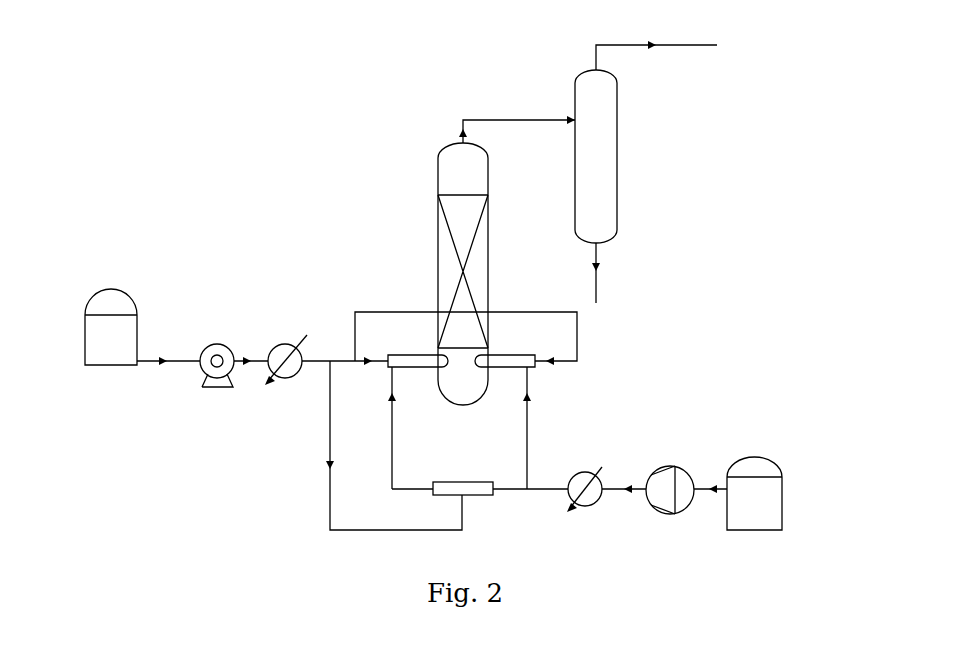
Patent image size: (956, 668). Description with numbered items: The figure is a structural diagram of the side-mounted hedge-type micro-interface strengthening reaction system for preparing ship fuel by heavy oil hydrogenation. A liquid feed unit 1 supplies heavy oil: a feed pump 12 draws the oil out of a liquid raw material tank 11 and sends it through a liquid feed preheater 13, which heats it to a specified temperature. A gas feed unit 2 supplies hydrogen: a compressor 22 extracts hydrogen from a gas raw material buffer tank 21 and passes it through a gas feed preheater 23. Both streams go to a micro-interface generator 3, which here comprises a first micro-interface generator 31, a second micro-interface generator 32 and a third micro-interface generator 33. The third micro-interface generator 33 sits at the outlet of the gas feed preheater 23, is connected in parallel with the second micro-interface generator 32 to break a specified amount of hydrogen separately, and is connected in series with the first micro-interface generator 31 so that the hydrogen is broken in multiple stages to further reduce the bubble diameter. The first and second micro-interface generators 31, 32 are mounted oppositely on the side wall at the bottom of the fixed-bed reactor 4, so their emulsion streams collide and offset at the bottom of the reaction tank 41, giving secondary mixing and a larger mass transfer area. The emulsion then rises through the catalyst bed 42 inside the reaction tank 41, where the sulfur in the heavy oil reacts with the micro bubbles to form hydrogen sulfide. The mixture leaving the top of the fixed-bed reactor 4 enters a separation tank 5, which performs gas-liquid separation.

The liquid feed unit 1 is at (210, 348).
The liquid raw material tank 11 is at (85, 330).
The feed pump 12 is at (208, 352).
The liquid feed preheater 13 is at (277, 343).
The gas feed unit 2 is at (743, 458).
The gas raw material buffer tank 21 is at (782, 480).
The compressor 22 is at (658, 473).
The gas feed preheater 23 is at (595, 465).
The micro-interface generator 3 is at (388, 355).
The first micro-interface generator 31 is at (393, 353).
The second micro-interface generator 32 is at (505, 353).
The third micro-interface generator 33 is at (462, 482).
The fixed-bed reactor 4 is at (451, 274).
The reaction tank 41 is at (488, 273).
The catalyst bed 42 is at (490, 218).
The separation tank 5 is at (617, 157).